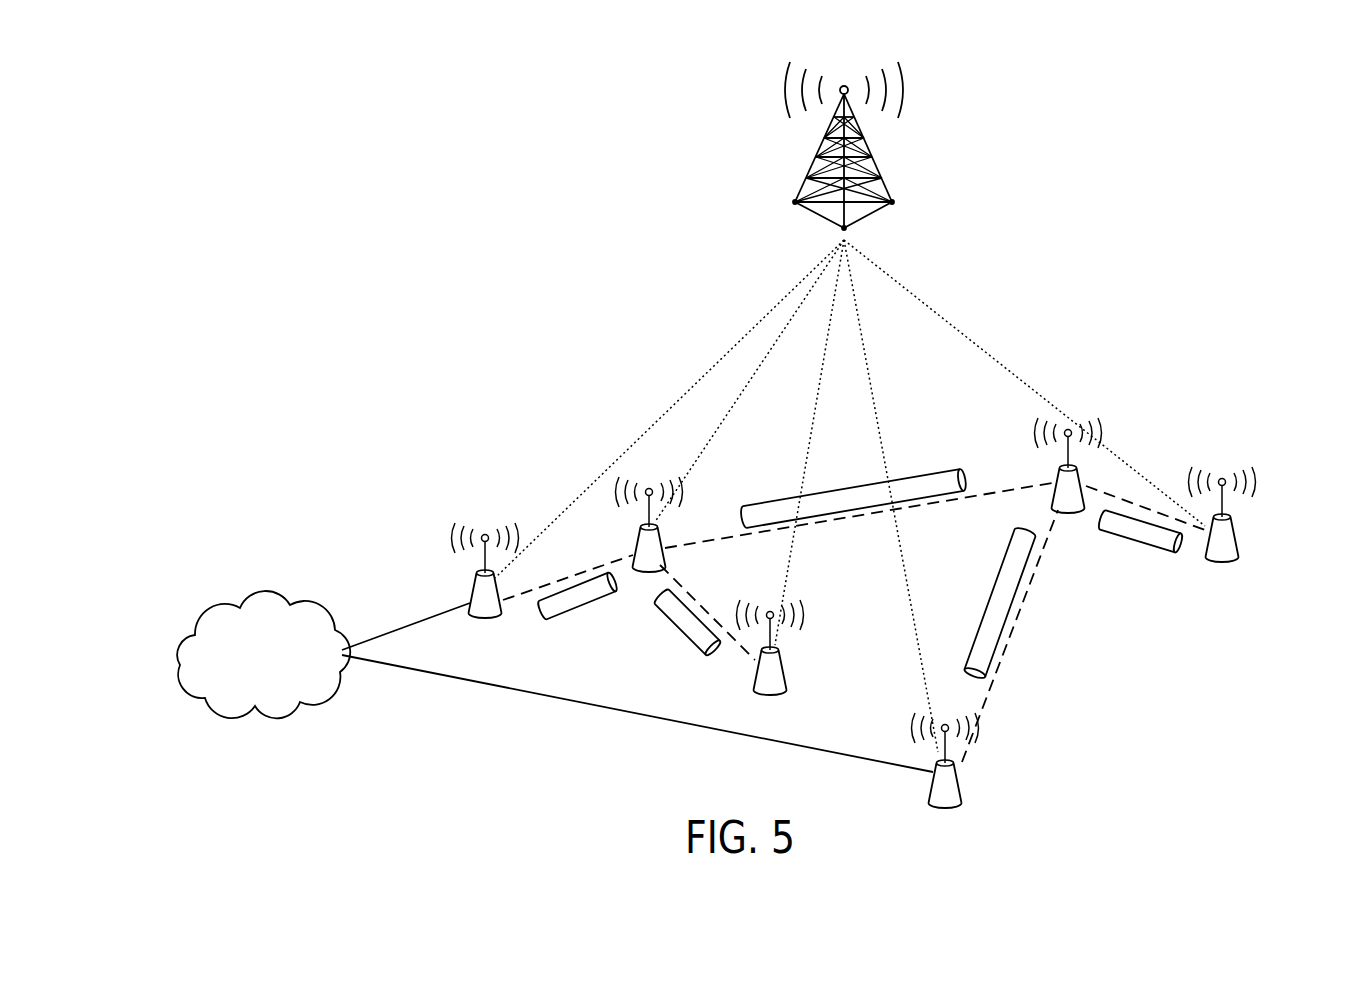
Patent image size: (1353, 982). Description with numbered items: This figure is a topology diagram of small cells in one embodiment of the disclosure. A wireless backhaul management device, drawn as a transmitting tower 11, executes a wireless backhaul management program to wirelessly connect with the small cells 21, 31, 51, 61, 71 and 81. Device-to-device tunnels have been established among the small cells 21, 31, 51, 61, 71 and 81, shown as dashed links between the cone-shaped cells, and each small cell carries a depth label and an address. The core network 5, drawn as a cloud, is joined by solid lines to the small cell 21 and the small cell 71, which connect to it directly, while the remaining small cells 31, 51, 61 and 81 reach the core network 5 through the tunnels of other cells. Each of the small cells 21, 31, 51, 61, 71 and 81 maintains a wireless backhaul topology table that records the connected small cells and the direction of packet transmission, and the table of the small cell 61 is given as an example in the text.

The core network 5 is at (238, 598).
The macro base station 11 is at (822, 145).
The small cell 21 is at (468, 598).
The small cell 31 is at (633, 542).
The small cell 51 is at (787, 668).
The small cell 61 is at (1073, 512).
The small cell 71 is at (940, 785).
The small cell 81 is at (1240, 537).